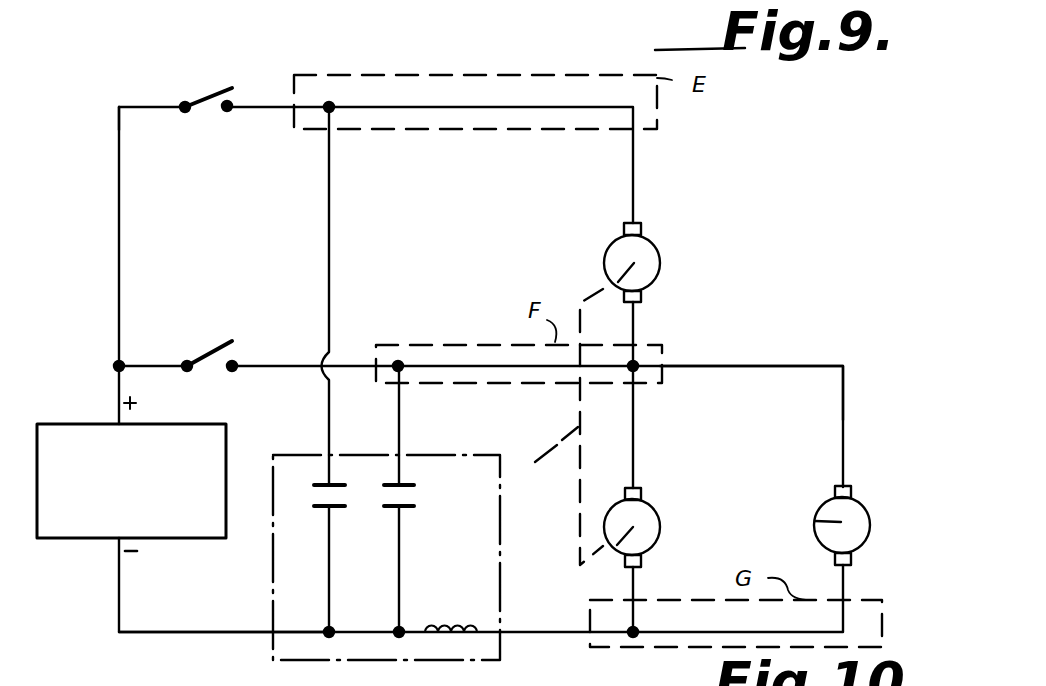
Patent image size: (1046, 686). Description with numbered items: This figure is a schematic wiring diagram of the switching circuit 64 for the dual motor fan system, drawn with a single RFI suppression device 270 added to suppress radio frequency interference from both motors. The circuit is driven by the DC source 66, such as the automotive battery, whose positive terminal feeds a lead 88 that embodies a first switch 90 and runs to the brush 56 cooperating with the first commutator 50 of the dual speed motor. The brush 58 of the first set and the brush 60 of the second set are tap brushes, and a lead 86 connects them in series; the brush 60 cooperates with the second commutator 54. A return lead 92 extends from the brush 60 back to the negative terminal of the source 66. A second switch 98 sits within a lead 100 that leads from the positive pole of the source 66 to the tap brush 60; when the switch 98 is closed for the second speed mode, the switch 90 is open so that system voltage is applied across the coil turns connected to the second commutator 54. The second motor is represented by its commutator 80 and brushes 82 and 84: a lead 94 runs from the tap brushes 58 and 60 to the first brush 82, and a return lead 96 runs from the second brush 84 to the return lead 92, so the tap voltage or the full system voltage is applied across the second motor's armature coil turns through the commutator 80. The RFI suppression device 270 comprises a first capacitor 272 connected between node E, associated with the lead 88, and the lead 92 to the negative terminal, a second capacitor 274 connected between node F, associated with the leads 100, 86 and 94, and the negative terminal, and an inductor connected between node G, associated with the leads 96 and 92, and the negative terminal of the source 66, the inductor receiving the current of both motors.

The first commutator 50 is at (660, 389).
The second commutator 54 is at (663, 510).
The brush 56 is at (642, 226).
The tap brush 58 is at (642, 297).
The tap brush 60 is at (642, 492).
The switching circuit 64 is at (124, 92).
The DC source 66 is at (163, 423).
The commutator 80 is at (812, 511).
The brush 82 is at (834, 489).
The brush 84 is at (832, 557).
The lead 86 is at (635, 416).
The lead 88 is at (121, 256).
The first switch 90 is at (229, 86).
The return lead 92 is at (152, 636).
The lead 94 is at (795, 364).
The return lead 96 is at (676, 636).
The second switch 98 is at (227, 338).
The lead 100 is at (448, 360).
The RFI suppression device 270 is at (496, 426).
The first capacitor 272 is at (322, 484).
The second capacitor 274 is at (405, 508).